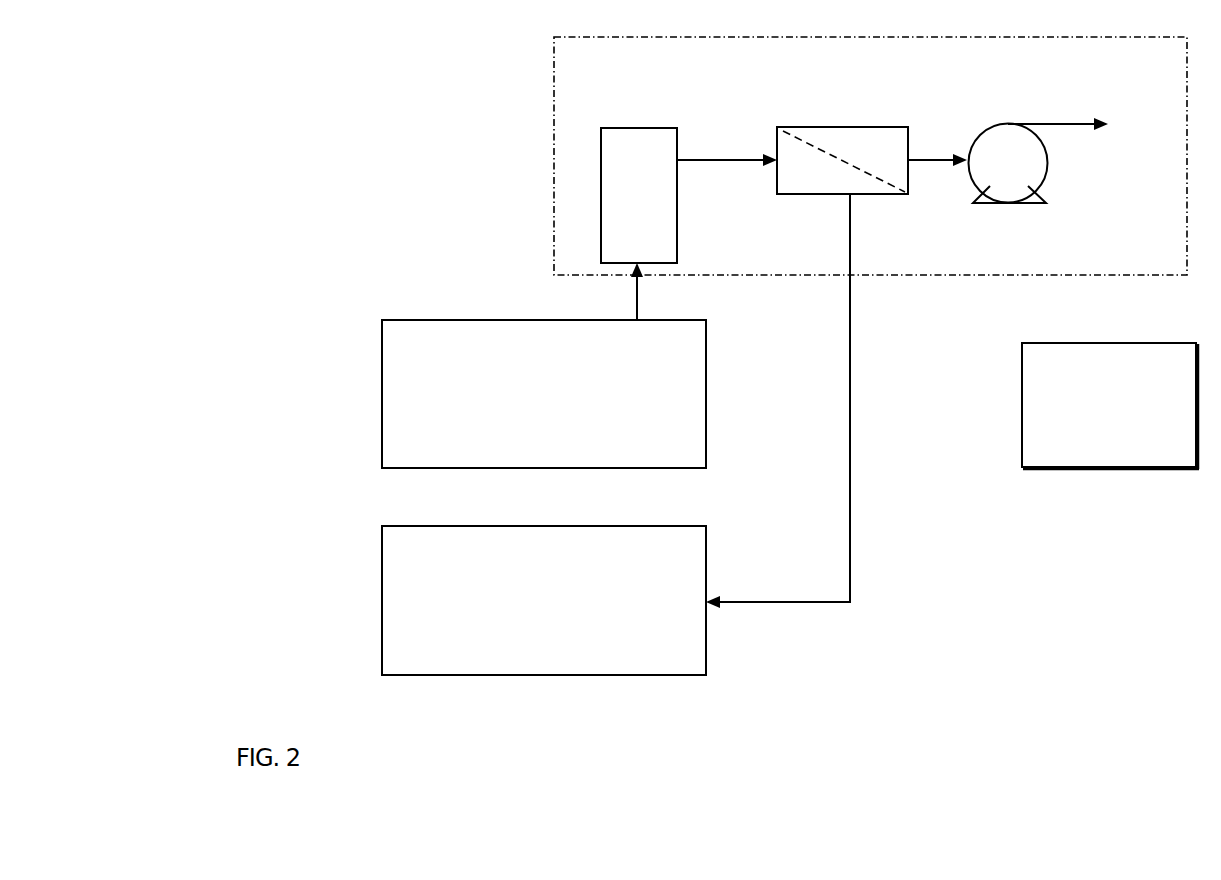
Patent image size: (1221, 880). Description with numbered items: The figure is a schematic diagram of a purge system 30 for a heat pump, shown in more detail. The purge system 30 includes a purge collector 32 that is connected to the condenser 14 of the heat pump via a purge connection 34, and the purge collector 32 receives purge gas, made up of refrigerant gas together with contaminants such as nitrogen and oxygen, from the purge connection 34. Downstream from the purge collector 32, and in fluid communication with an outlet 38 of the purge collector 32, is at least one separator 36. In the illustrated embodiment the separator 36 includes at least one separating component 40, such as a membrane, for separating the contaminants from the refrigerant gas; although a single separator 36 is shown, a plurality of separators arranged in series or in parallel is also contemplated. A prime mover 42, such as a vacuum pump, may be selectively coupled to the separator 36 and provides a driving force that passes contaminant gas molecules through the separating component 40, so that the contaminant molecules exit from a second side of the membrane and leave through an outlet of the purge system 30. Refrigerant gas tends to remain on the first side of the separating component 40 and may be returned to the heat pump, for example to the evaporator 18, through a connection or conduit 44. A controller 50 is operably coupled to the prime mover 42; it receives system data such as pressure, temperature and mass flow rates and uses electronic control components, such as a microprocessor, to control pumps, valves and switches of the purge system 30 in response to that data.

The condenser 14 is at (477, 320).
The evaporator 18 is at (382, 602).
The purge system 30 is at (546, 80).
The purge collector 32 is at (637, 128).
The purge connection 34 is at (637, 305).
The separator 36 is at (777, 132).
The outlet 38 is at (677, 157).
The separating component 40 is at (842, 162).
The prime mover 42 is at (1010, 123).
The connection or conduit 44 is at (850, 482).
The controller 50 is at (1133, 473).